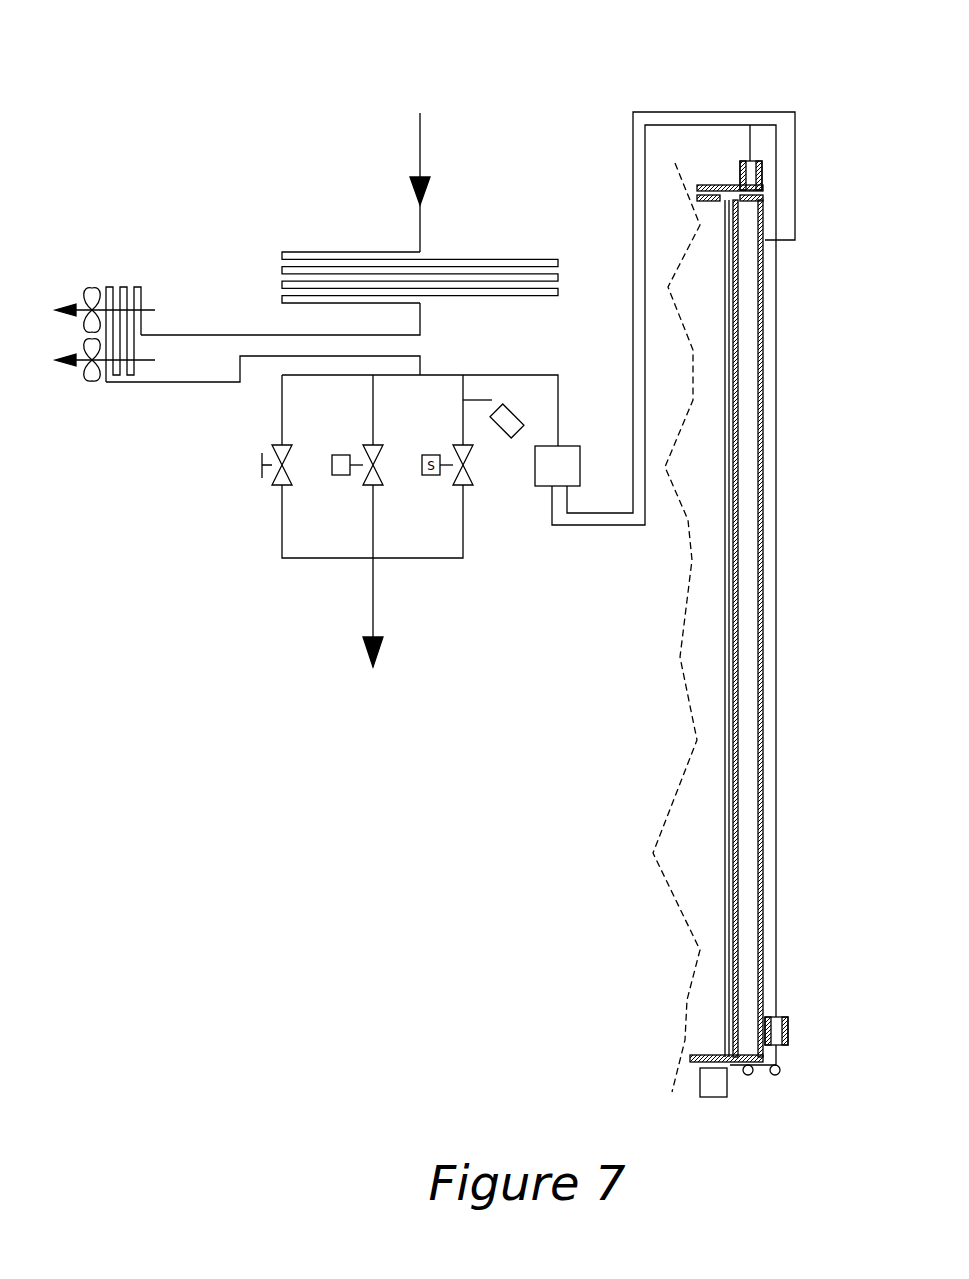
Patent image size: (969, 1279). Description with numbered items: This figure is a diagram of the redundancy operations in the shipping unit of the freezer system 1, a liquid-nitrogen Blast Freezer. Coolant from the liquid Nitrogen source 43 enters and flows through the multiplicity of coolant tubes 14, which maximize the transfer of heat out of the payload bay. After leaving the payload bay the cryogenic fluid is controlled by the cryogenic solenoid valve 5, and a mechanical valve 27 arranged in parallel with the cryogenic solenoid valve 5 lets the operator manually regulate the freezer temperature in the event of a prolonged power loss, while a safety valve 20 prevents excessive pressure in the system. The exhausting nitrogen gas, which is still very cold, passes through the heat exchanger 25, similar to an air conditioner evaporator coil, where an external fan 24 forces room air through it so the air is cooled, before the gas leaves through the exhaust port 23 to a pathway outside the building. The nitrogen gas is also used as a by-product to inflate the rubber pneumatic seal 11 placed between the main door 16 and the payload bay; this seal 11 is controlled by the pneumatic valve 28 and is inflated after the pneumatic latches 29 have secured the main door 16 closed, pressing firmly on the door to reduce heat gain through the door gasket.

The freezer system 1 is at (782, 641).
The cryogenic solenoid valve 5 is at (332, 476).
The rubber pneumatic seal 11 is at (735, 436).
The coolant tubes 14 is at (308, 252).
The main door 16 is at (750, 332).
The safety valve 20 is at (512, 408).
The exhaust port 23 is at (373, 668).
The external fan 24 is at (88, 287).
The heat exchanger 25 is at (128, 287).
The mechanical valve 27 is at (262, 465).
The pneumatic valve 28 is at (542, 487).
The pneumatic latches 29 is at (762, 167).
The liquid Nitrogen source 43 is at (421, 175).